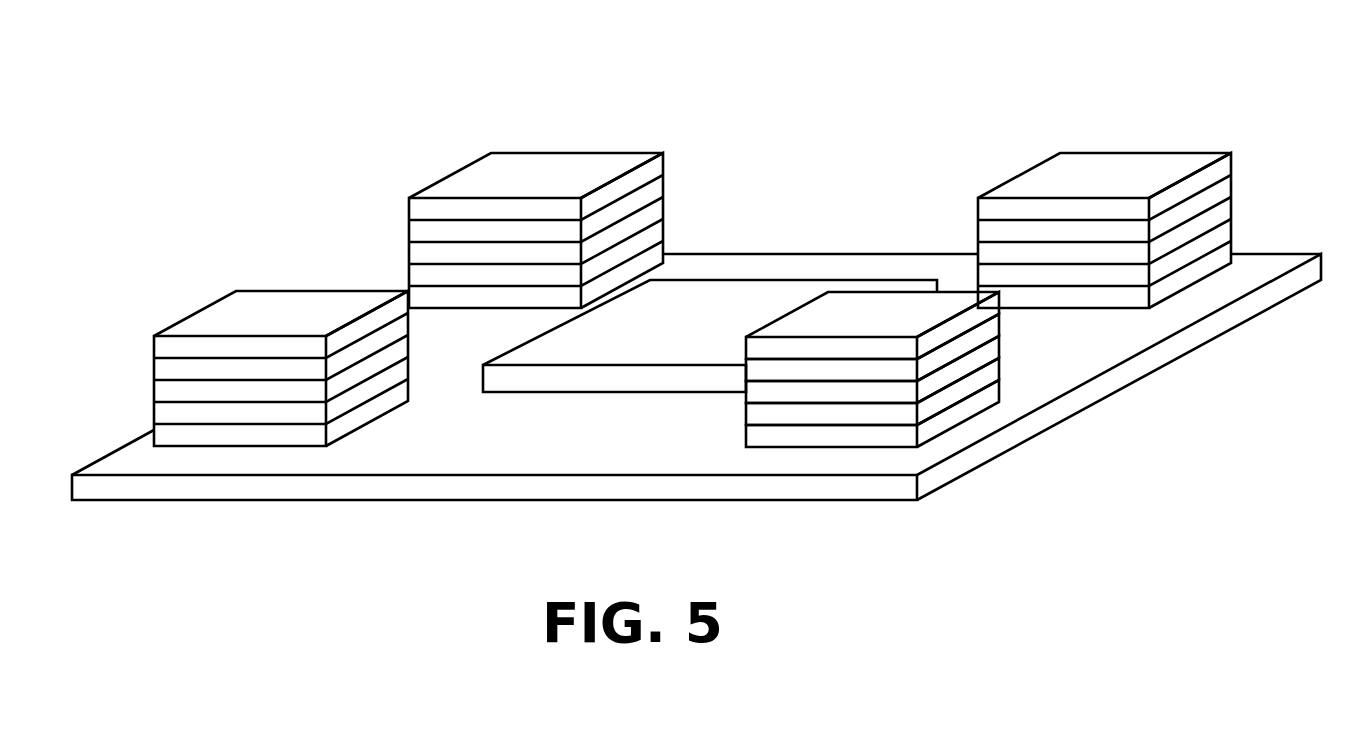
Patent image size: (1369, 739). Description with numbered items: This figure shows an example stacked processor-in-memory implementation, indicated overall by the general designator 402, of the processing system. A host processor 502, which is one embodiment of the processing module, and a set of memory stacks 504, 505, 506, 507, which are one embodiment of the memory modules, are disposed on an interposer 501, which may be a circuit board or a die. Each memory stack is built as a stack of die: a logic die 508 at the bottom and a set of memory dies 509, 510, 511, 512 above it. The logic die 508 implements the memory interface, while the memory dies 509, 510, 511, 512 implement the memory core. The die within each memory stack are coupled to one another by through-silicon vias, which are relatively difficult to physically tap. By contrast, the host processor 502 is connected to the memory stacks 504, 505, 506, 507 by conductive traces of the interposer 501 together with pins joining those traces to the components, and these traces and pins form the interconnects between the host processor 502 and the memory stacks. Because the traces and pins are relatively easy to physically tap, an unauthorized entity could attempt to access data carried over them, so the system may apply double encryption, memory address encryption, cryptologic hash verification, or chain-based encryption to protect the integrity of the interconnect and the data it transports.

The device assembly 402 is at (695, 82).
The interposer 501 is at (1125, 368).
The host processor 502 is at (681, 378).
The memory stack 504 is at (217, 318).
The memory stack 505 is at (472, 171).
The memory stack 506 is at (1048, 171).
The memory stack 507 is at (862, 366).
The logic die 508 is at (977, 400).
The memory die 509 is at (977, 375).
The memory die 510 is at (977, 352).
The memory die 511 is at (977, 329).
The memory die 512 is at (746, 345).